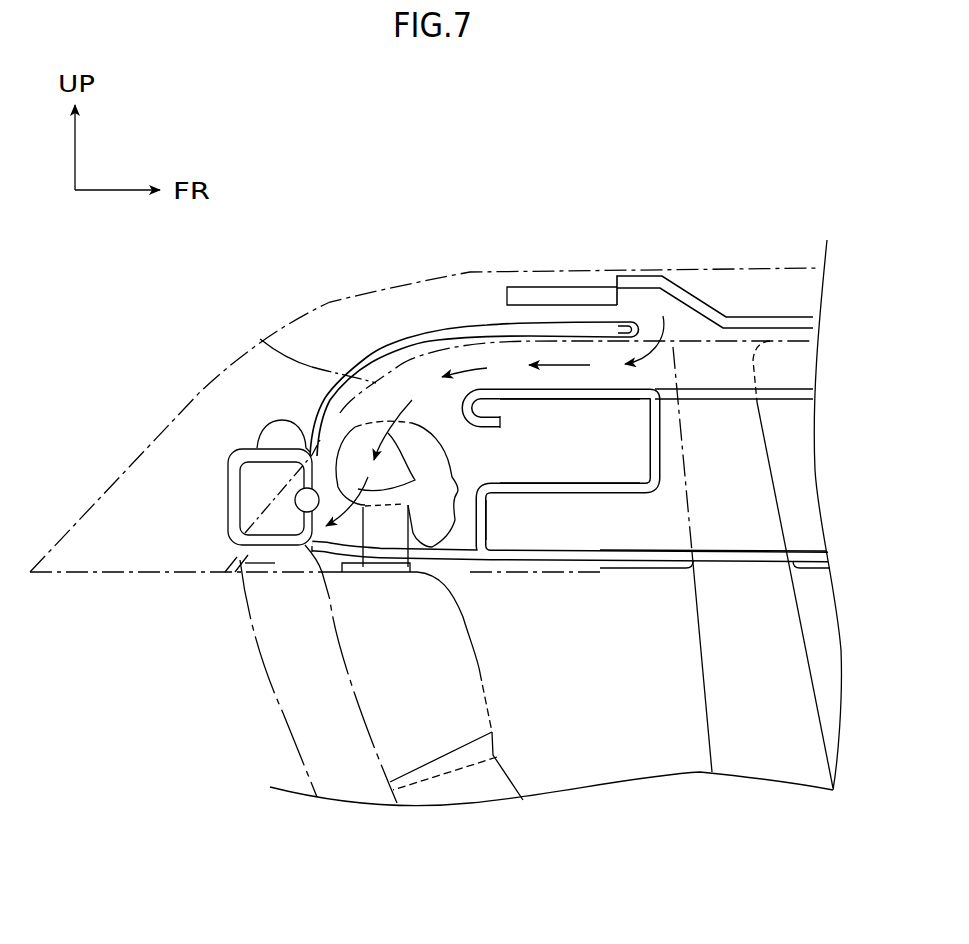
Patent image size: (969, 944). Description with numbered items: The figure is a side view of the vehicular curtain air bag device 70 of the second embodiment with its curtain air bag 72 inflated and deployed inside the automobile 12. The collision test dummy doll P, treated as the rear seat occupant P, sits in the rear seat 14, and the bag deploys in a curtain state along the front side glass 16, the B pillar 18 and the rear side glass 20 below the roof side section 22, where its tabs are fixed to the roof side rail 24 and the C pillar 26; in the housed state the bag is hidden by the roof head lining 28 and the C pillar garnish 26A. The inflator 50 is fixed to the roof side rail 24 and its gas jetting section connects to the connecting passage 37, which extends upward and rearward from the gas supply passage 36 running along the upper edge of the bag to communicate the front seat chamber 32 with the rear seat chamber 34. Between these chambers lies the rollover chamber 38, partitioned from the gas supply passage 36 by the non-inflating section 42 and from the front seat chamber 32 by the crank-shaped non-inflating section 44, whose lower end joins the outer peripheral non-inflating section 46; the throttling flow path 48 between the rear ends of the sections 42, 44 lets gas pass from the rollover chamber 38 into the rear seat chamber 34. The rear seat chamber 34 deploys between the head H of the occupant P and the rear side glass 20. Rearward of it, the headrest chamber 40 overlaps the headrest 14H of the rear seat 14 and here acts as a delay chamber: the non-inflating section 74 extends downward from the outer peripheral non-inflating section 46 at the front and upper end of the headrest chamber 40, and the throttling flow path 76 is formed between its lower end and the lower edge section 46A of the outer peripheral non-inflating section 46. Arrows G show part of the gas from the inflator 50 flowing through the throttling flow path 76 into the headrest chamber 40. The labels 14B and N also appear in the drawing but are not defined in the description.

The vehicular curtain air bag device 70 is at (509, 183).
The automobile 12 is at (327, 293).
The rear seat 14 is at (255, 648).
The pillar lower portion 14B is at (280, 702).
The headrest 14H is at (283, 430).
The front side glass 16 is at (793, 450).
The B pillar 18 is at (697, 668).
The rear side glass 20 is at (487, 352).
The roof side section 22 is at (783, 266).
The roof side rail 24 is at (705, 268).
The C pillar 26 is at (318, 361).
The C pillar garnish 26A is at (200, 433).
The roof head lining 28 is at (407, 297).
The front seat chamber 32 is at (798, 500).
The rear seat chamber 34 is at (413, 380).
The gas supply passage 36 is at (717, 367).
The connecting passage 37 is at (647, 306).
The rollover chamber 38 is at (583, 540).
The headrest chamber 40 is at (253, 507).
The non-inflating section 42 is at (605, 394).
The crank-shaped non-inflating section 44 is at (607, 493).
The outer peripheral non-inflating section 46 is at (740, 560).
The lower edge section 46A is at (288, 560).
The throttling flow path 48 is at (485, 467).
The inflator 50 is at (549, 287).
The curtain air bag 72 is at (638, 572).
The non-inflating section 74 is at (302, 483).
The throttling flow path 76 is at (301, 547).
The arrows G is at (672, 328).
The head H is at (453, 450).
The neck of occupant N is at (383, 572).
The rear seat occupant P is at (489, 693).